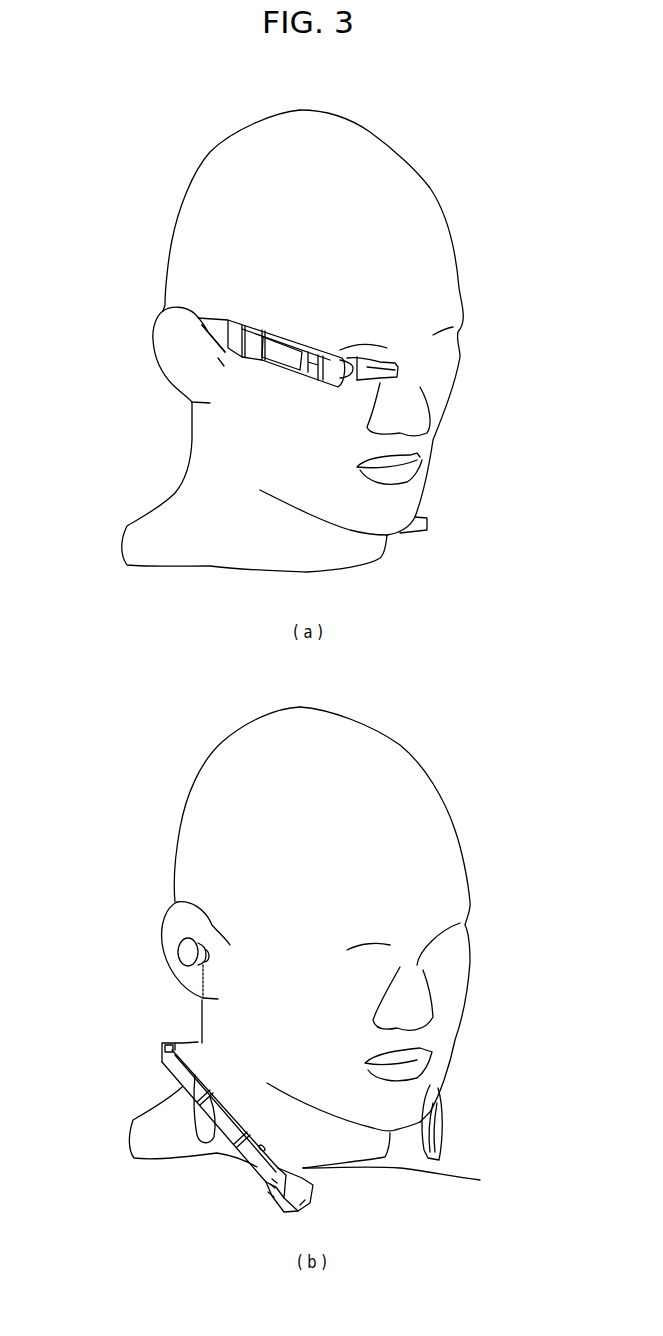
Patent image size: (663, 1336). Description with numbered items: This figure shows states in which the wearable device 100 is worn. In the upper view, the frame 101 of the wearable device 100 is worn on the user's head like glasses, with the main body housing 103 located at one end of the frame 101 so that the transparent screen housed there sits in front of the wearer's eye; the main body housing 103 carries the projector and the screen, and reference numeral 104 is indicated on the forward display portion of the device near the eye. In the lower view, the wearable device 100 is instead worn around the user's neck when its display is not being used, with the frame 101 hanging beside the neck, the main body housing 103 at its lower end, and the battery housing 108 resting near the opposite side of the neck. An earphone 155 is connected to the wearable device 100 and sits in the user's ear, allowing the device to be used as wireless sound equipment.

The wearable device 100 is at (257, 304).
The frame 101 is at (215, 330).
The main body housing 103 is at (250, 345).
The display unit / prism 104 is at (397, 377).
The battery housing 108 is at (440, 1127).
The earphone 155 is at (183, 950).